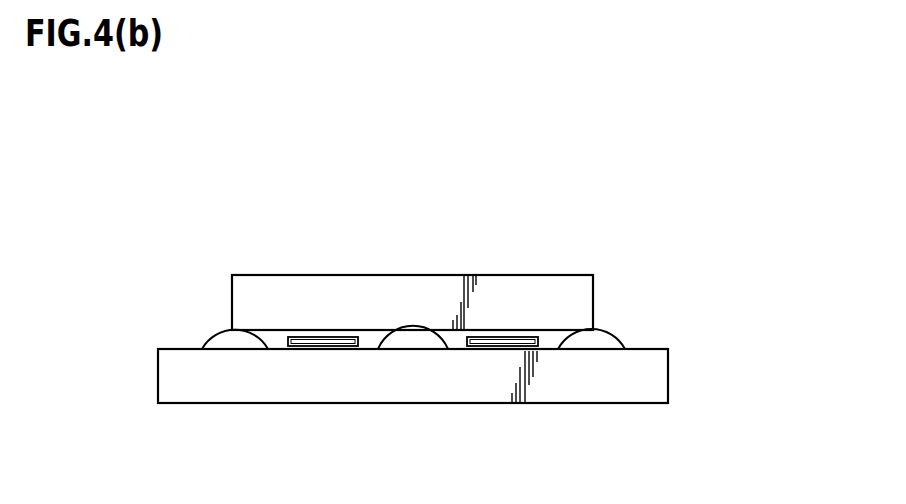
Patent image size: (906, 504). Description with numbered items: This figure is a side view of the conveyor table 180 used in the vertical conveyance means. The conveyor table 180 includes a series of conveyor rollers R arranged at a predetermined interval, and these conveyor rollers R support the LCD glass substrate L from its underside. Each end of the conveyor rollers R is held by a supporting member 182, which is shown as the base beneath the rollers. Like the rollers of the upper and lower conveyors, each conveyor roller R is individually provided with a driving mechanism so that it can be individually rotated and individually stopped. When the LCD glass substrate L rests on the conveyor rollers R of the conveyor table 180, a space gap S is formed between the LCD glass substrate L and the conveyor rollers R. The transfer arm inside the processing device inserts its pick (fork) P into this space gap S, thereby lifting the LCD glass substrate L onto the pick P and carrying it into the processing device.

The conveyor table 180 is at (438, 155).
The supporting member 182 is at (668, 375).
The LCD glass substrate L is at (545, 275).
The conveyor roller R is at (612, 335).
The pick (fork) P is at (330, 348).
The space gap S is at (372, 327).